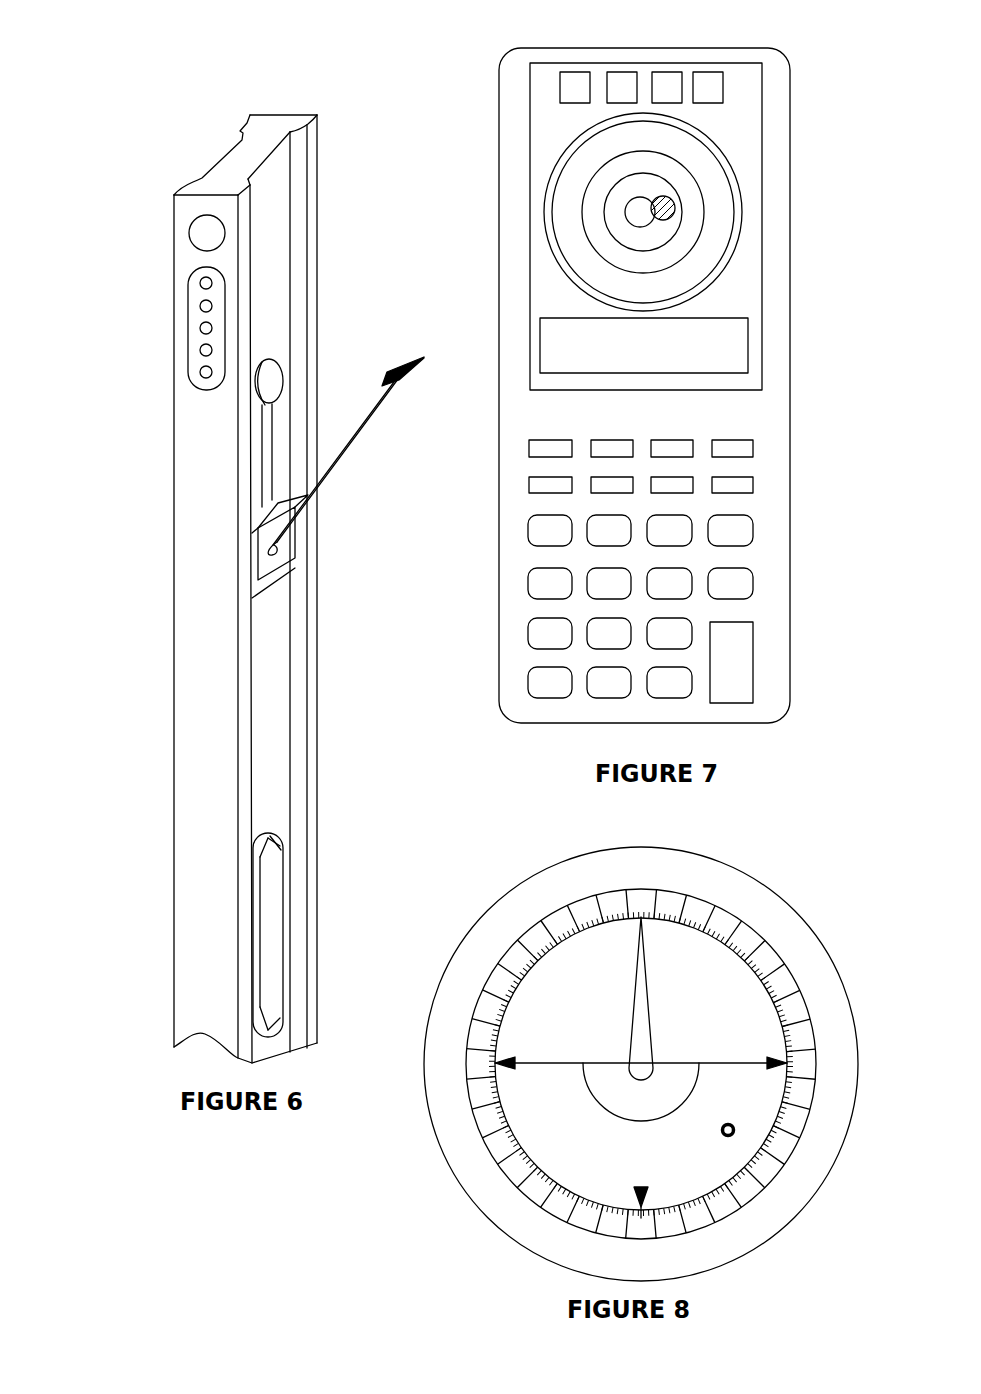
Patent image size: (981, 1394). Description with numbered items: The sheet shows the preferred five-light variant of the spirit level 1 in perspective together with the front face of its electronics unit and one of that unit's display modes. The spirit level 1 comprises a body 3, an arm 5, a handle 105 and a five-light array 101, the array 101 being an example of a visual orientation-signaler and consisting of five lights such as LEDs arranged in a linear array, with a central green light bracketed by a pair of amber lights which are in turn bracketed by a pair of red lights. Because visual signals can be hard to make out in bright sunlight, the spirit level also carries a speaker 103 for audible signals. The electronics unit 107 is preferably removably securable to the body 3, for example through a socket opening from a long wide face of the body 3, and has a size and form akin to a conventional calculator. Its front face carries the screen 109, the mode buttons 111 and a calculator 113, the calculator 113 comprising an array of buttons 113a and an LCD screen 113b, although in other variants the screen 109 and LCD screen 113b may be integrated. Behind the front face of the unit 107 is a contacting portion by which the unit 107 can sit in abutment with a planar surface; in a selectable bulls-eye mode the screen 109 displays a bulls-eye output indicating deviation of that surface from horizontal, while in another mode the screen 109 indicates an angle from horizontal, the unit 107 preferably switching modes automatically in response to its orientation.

In FIG. 6, the spirit level 1 is at (259, 140).
In FIG. 6, the body 3 is at (293, 142).
In FIG. 6, the arm 5 is at (405, 383).
In FIG. 6, the five-light array 101 is at (80, 324).
In FIG. 6, the speaker 103 is at (202, 232).
In FIG. 6, the handle 105 is at (267, 973).
In FIG. 7, the electronics unit 107 is at (790, 173).
In FIG. 7, the screen 109 is at (713, 238).
In FIG. 8, the screen 109 is at (548, 1120).
In FIG. 7, the mode buttons 111 is at (715, 75).
In FIG. 7, the calculator 113 is at (731, 530).
In FIG. 7, the array of buttons 113a is at (742, 465).
In FIG. 7, the LCD screen 113b is at (737, 342).